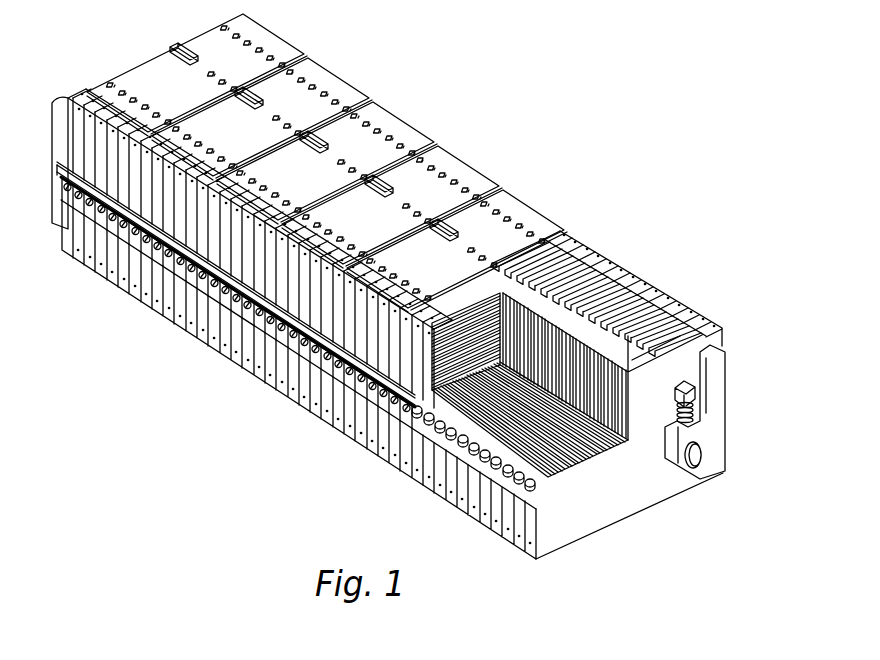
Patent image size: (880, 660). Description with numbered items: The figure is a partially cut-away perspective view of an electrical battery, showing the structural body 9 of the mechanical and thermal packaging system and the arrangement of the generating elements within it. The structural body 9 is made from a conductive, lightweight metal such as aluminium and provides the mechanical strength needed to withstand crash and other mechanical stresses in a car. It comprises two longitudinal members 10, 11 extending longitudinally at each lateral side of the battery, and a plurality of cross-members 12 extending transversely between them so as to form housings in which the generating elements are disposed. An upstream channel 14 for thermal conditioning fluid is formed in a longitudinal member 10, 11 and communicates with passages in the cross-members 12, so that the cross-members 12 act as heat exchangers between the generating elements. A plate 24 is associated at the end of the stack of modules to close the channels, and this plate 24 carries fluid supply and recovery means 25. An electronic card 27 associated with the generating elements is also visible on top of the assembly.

The structural body 9 is at (303, 373).
The longitudinal member 10 is at (477, 477).
The longitudinal member 11 is at (662, 294).
The cross-member 12 is at (500, 330).
The upstream channel 14 is at (428, 403).
The plate 24 is at (610, 488).
The fluid supply and recovery means 25 is at (710, 436).
The electronic card 27 is at (512, 214).